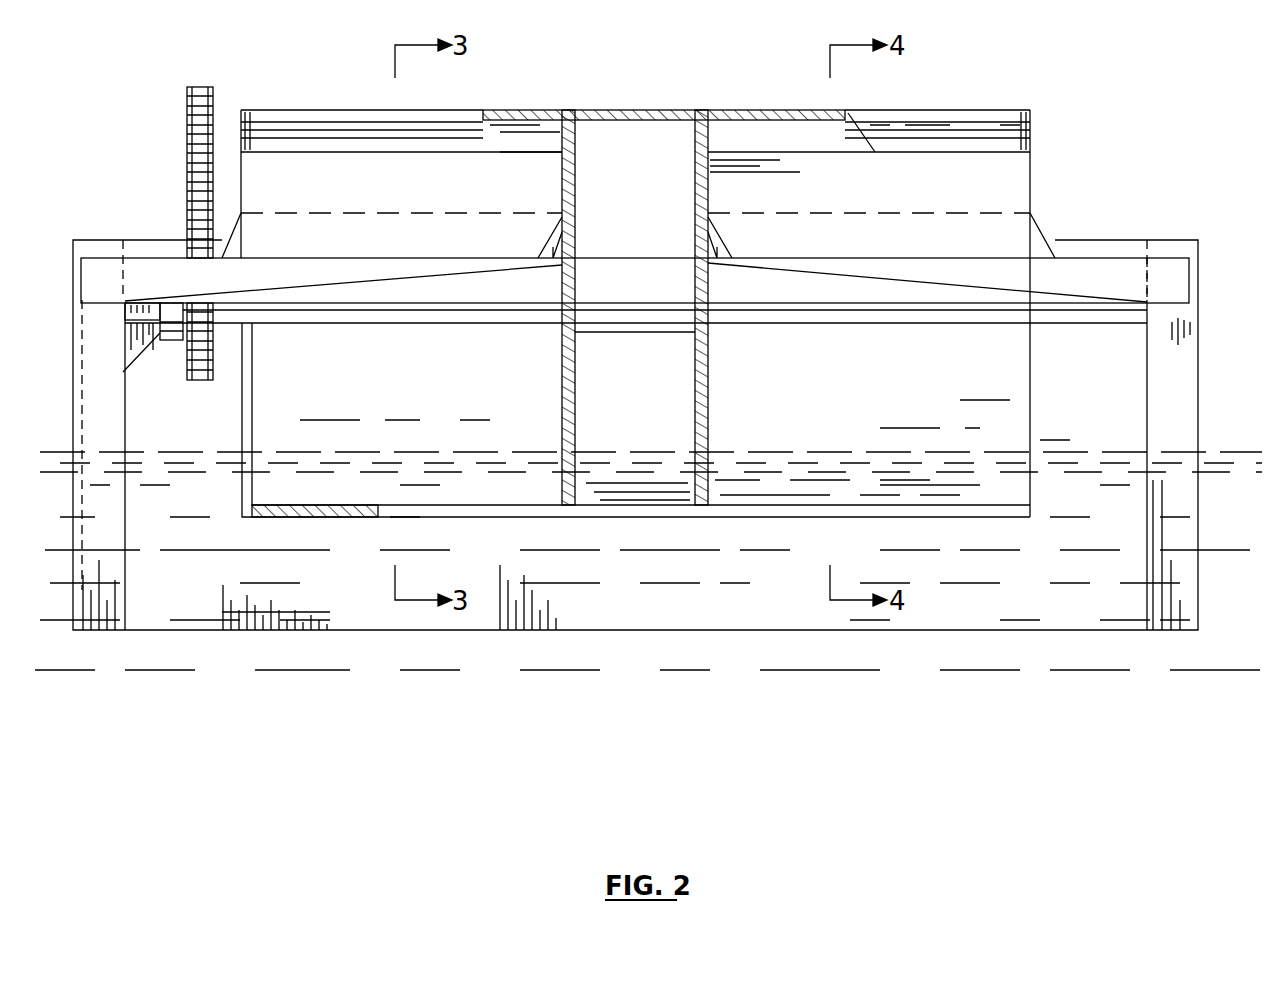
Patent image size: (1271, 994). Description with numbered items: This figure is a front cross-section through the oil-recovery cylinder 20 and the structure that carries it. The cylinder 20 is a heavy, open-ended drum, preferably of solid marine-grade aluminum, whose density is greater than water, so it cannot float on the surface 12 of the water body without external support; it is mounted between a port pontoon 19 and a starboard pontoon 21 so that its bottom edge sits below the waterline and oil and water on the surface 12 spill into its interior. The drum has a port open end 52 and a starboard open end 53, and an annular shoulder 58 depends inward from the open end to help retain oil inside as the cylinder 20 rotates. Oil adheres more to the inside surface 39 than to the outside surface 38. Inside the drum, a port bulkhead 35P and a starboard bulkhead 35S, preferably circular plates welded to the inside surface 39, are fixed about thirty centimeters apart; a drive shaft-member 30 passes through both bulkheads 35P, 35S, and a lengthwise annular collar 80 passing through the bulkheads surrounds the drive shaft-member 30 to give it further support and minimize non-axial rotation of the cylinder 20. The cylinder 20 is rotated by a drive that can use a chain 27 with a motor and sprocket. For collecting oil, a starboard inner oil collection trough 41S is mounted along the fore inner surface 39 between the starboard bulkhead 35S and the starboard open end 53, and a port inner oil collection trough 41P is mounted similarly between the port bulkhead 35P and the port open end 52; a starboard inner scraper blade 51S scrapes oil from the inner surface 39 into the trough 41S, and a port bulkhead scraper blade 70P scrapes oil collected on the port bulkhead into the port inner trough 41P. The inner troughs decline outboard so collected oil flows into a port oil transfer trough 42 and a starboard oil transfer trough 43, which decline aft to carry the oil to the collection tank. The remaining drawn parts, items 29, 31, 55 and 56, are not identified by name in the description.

The surface of the water body 12 is at (215, 446).
The port pontoon 19 is at (1200, 355).
The cylinder 20 is at (325, 110).
The starboard pontoon 21 is at (98, 393).
The chain 27 is at (187, 132).
The bearing block 29 is at (163, 345).
The drive shaft-member 30 is at (398, 328).
The bearing 31 is at (123, 333).
The starboard bulkhead 35S is at (562, 355).
The port bulkhead 35P is at (710, 365).
The outside surface 38 is at (750, 104).
The inside surface 39 is at (565, 128).
The starboard inner oil collection trough 41S is at (268, 268).
The port inner oil collection trough 41P is at (1048, 275).
The port oil transfer trough 42 is at (1163, 275).
The starboard oil transfer trough 43 is at (105, 272).
The starboard inner scraper blade 51S is at (390, 222).
The port open end 52 is at (1032, 157).
The starboard open end 53 is at (270, 432).
The port brace 55 is at (712, 197).
The starboard brace 56 is at (562, 195).
The annular shoulder 58 is at (255, 495).
The port bulkhead scraper blade 70P is at (735, 237).
The lengthwise annular collar 80 is at (618, 335).